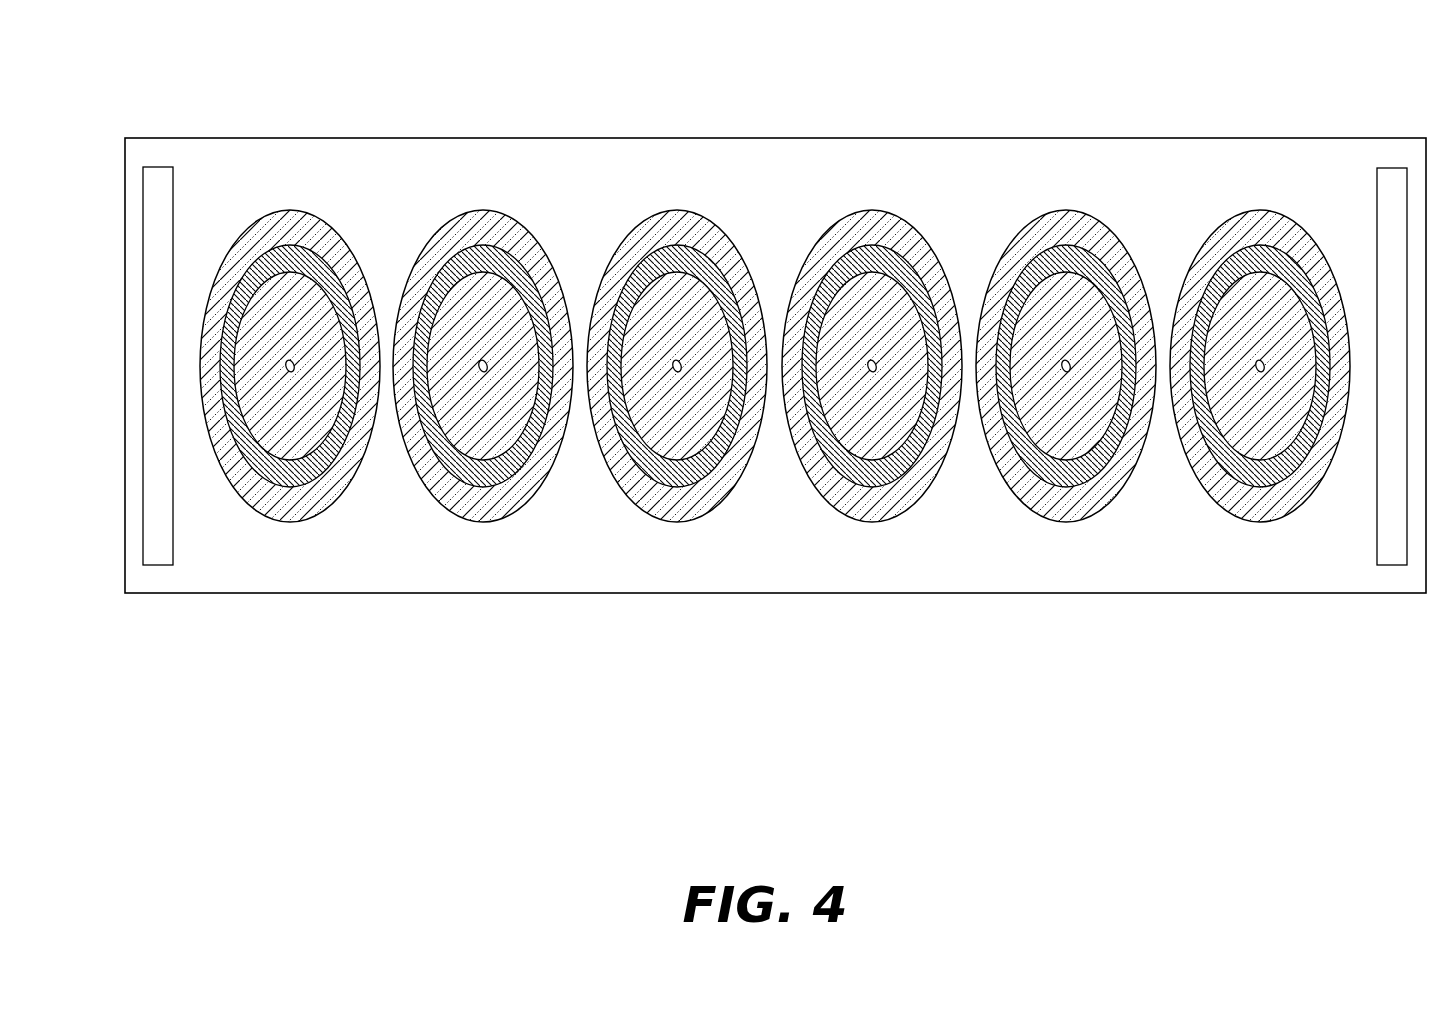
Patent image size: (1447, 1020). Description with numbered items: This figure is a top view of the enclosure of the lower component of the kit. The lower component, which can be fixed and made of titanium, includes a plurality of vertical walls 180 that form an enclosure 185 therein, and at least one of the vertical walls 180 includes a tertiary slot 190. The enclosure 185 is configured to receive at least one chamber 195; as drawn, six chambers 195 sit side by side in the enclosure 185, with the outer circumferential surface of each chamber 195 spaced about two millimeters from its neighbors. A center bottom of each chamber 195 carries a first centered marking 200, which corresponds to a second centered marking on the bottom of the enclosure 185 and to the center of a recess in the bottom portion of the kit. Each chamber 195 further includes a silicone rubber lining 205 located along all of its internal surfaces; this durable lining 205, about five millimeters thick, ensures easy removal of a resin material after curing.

The vertical walls 180 is at (297, 115).
The enclosure 185 is at (963, 157).
The tertiary slot 190 is at (160, 165).
The chamber 195 is at (650, 521).
The first centered marking 200 is at (872, 378).
The silicone rubber lining 205 is at (327, 273).